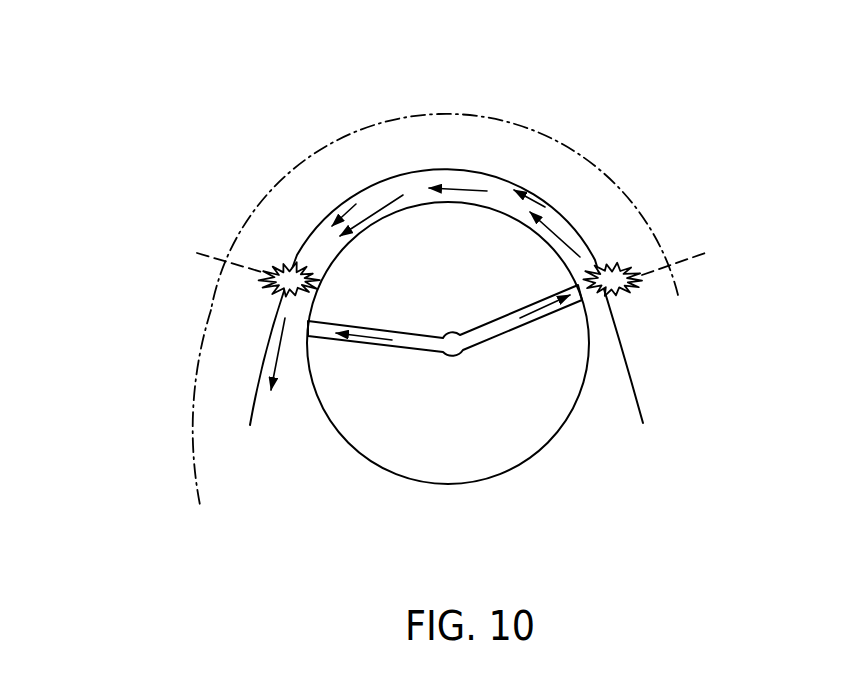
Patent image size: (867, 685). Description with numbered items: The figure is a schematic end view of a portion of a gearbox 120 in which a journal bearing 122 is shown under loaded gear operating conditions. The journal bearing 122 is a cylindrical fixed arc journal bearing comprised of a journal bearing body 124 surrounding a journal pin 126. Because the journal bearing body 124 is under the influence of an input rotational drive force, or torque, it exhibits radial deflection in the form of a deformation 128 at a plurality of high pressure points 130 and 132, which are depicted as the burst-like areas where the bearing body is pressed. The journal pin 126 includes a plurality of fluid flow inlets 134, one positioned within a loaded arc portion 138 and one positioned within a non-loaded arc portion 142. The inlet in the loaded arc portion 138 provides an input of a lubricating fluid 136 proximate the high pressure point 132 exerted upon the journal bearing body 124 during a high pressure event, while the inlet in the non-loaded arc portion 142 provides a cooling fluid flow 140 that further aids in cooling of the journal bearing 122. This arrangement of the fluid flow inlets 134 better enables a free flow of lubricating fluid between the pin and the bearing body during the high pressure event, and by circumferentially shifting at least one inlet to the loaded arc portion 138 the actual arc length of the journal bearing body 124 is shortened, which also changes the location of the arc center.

The gearbox 120 is at (222, 58).
The journal bearing 122 is at (460, 163).
The journal bearing body 124 is at (442, 168).
The journal pin 126 is at (328, 420).
The deformation 128 is at (283, 170).
The high pressure point 130 is at (277, 267).
The high pressure point 132 is at (611, 266).
The fluid flow inlets 134 is at (307, 350).
The lubricating fluid 136 is at (382, 207).
The loaded arc portion 138 is at (544, 132).
The cooling fluid flow 140 is at (275, 362).
The non-loaded arc portion 142 is at (192, 400).